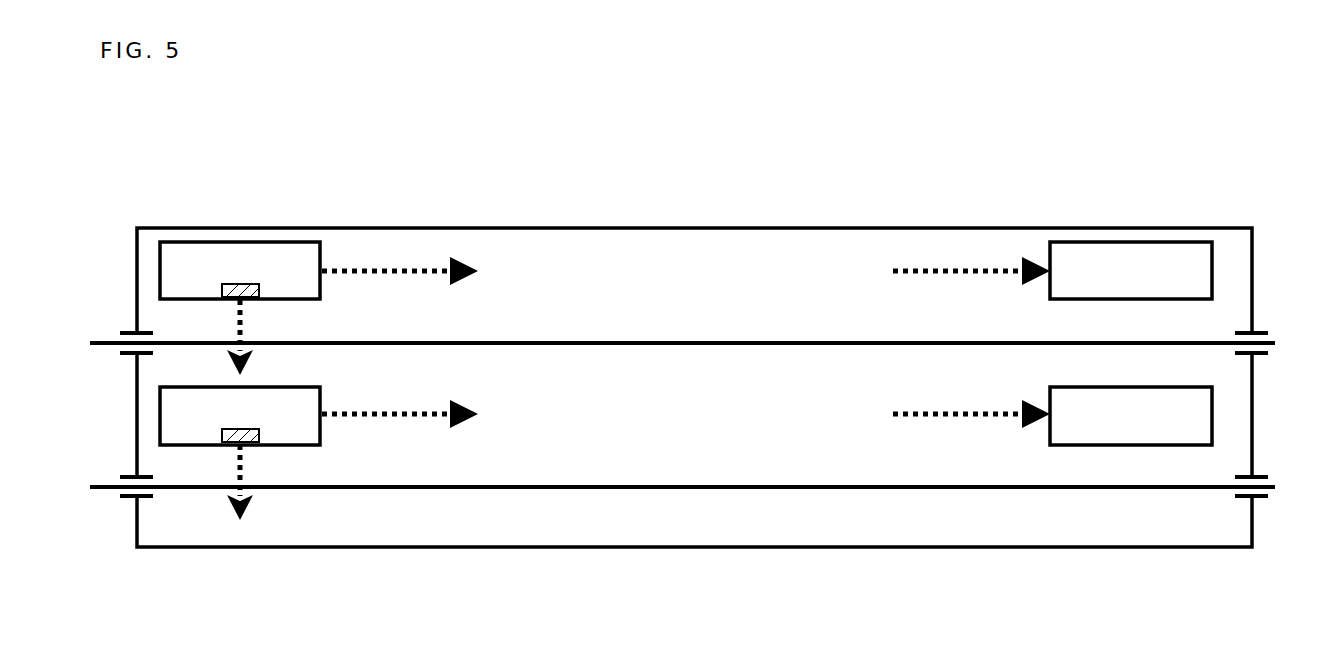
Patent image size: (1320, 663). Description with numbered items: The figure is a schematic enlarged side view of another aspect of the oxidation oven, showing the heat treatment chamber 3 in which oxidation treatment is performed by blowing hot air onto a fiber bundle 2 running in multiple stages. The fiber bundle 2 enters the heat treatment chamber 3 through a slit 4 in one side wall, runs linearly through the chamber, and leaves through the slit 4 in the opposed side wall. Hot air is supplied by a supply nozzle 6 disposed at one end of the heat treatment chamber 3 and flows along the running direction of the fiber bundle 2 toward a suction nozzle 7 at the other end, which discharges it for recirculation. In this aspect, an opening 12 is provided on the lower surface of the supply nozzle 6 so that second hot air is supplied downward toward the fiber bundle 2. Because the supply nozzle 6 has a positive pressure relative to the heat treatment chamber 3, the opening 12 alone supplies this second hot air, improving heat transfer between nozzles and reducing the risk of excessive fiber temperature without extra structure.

The fiber bundle 2 is at (170, 341).
The heat treatment chamber 3 is at (572, 228).
The slit 4 is at (1258, 333).
The supply nozzle 6 is at (213, 242).
The suction nozzle 7 is at (1100, 242).
The opening 12 is at (240, 284).